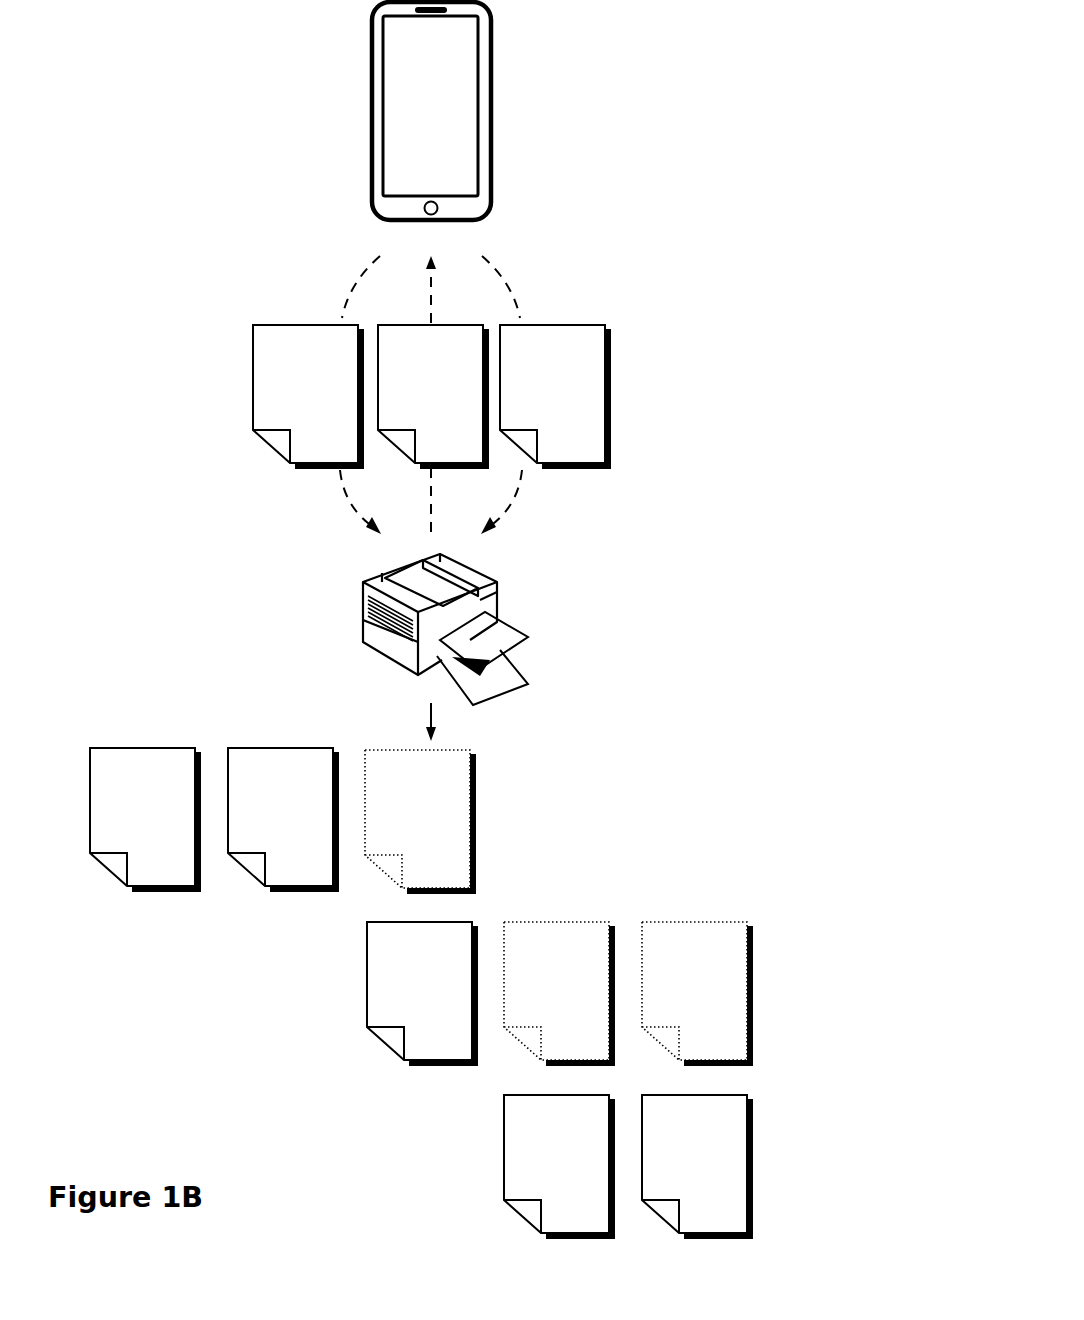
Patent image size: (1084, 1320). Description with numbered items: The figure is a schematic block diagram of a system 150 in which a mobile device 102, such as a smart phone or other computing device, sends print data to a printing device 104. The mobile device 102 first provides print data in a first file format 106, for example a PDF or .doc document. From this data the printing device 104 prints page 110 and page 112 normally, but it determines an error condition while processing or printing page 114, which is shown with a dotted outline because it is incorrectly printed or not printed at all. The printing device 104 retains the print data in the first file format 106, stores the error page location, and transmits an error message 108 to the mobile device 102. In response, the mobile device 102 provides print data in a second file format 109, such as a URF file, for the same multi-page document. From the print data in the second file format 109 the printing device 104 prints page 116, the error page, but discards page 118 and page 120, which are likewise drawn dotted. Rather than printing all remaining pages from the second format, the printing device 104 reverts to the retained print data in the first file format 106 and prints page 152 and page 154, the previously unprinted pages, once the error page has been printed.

The mobile device 102 is at (368, 62).
The printing device 104 is at (362, 636).
The print data in a first file format 106 is at (286, 408).
The error message 108 is at (411, 408).
The print data in a second file format 109 is at (533, 408).
The page 110 is at (123, 831).
The page 112 is at (261, 831).
The page 114 is at (398, 833).
The page 116 is at (400, 1005).
The page 118 is at (537, 1005).
The page 120 is at (675, 1005).
The system 150 is at (727, 143).
The page 152 is at (537, 1178).
The page 154 is at (675, 1178).